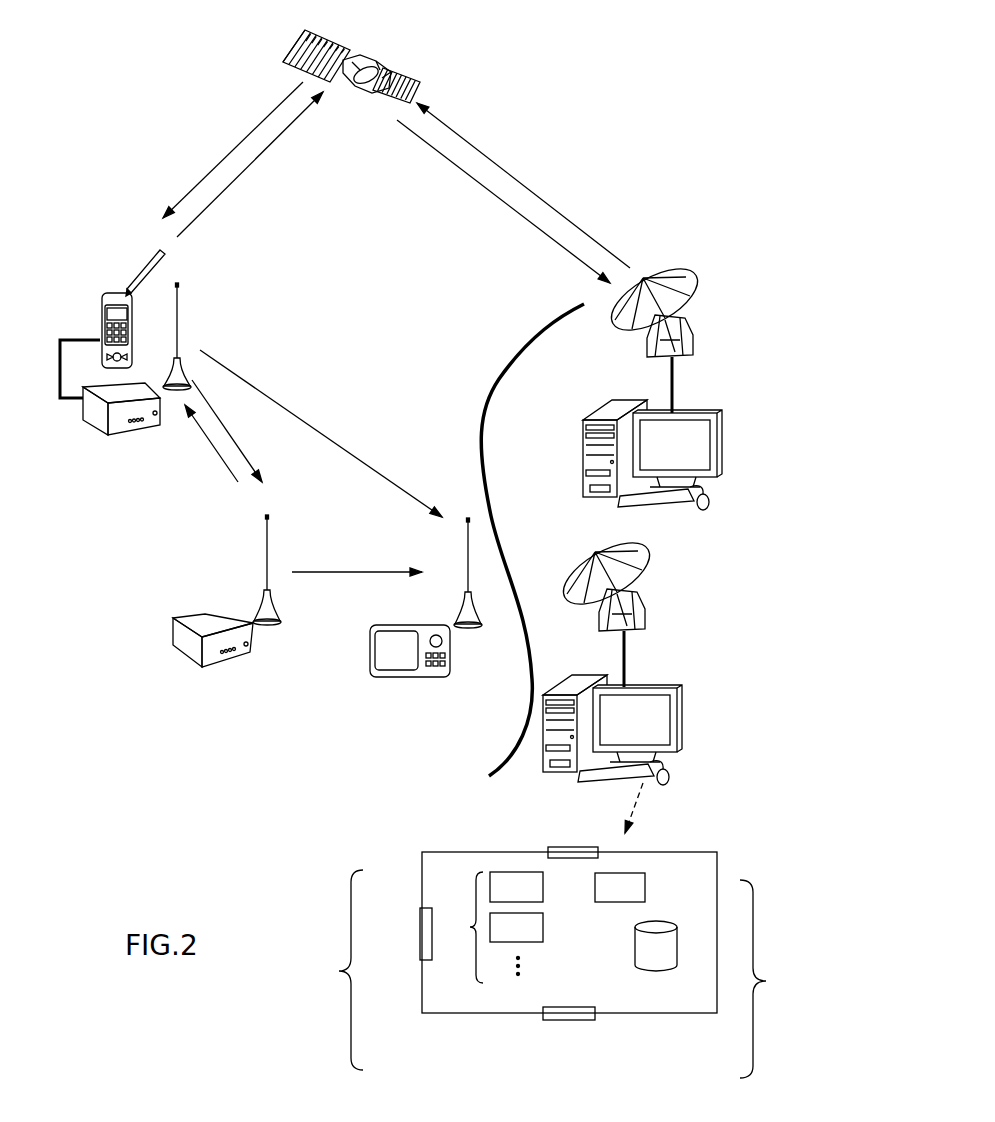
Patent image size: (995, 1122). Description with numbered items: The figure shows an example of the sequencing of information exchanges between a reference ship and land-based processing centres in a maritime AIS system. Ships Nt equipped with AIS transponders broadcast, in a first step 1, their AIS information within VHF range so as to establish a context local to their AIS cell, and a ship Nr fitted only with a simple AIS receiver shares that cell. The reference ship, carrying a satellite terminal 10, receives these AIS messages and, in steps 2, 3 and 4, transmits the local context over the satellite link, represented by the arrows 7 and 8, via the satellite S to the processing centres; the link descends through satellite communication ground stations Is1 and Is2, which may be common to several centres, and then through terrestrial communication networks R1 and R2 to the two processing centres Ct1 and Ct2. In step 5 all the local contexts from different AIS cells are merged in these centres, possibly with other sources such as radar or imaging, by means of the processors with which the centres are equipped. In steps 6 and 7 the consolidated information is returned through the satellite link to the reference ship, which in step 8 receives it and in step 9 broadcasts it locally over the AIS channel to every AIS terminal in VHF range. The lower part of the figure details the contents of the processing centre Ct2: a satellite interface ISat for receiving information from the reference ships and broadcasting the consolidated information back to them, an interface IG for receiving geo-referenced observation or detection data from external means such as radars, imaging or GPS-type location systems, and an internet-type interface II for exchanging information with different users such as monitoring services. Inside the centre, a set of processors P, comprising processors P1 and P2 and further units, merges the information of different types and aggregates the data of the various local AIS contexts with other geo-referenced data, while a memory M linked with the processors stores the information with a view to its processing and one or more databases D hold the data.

The satellite S is at (377, 60).
The transmission of local context by reference ship 2 is at (205, 210).
The reception of consolidated context by reference ship 8 is at (185, 200).
The return of consolidated information via satellite link 7 is at (267, 118).
The transmission via satellite to processing centres 3 is at (445, 155).
The return of consolidated information from processing centre 6 is at (588, 233).
The terminal 10 is at (100, 300).
The local AIS broadcast 9 is at (213, 355).
The AIS broadcast by ships 1 is at (223, 463).
The ship with AIS transponder Nt is at (190, 640).
The ship with simple AIS receiver Nr is at (398, 677).
The satellite communication ground station Is1 is at (700, 262).
The transfer to processing centres via terrestrial network 4 is at (628, 333).
The terrestrial communication means R1 is at (678, 388).
The first processing centre Ct1 is at (693, 428).
The merging of local contexts 5 is at (578, 445).
The satellite communication ground station Is2 is at (640, 557).
The terrestrial communication means R2 is at (627, 667).
The second processing centre Ct2 is at (665, 712).
The internet-type interface II is at (557, 852).
The external data interface IG is at (420, 937).
The satellite interface ISat is at (570, 1013).
The set of processors P is at (483, 927).
The first processor P1 is at (516, 887).
The second processor P2 is at (516, 927).
The memory M is at (620, 887).
The database D is at (656, 946).